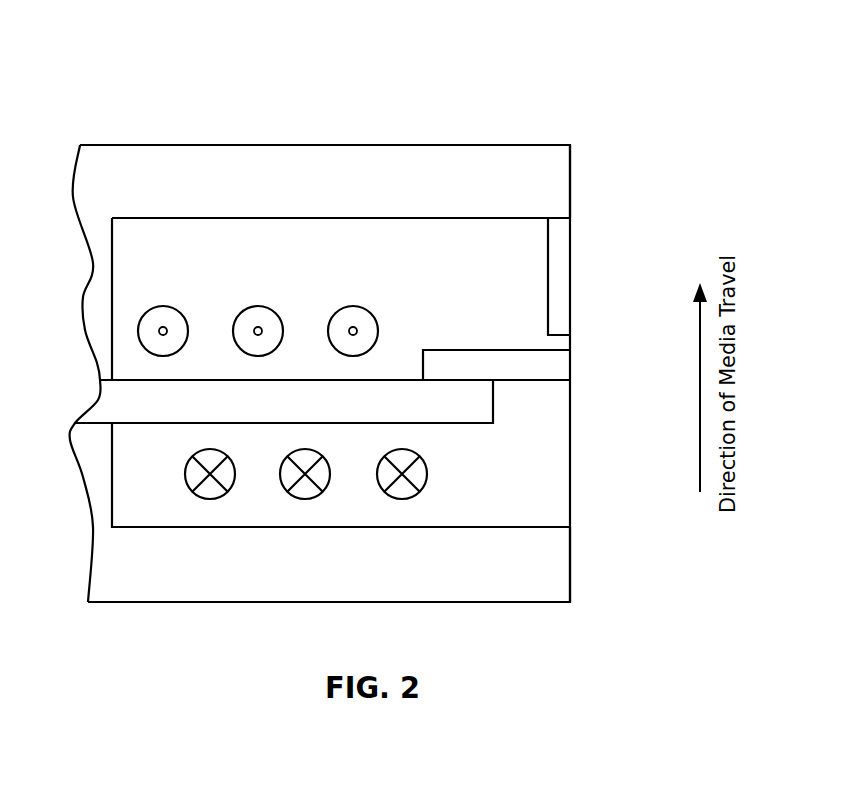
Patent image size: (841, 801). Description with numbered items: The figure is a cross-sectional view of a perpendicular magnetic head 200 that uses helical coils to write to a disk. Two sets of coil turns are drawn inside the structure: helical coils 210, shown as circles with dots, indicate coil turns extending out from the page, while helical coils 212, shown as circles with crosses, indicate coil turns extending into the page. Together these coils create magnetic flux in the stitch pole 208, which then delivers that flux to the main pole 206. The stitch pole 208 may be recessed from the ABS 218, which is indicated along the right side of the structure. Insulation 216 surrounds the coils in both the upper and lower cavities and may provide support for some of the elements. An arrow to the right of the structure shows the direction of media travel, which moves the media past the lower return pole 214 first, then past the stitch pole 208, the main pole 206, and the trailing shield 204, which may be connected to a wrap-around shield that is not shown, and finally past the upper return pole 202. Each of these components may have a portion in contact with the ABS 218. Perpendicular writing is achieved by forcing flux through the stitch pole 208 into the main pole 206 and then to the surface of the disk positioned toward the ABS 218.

The perpendicular magnetic head 200 is at (161, 66).
The upper return pole 202 is at (437, 194).
The trailing shield 204 is at (570, 283).
The main pole 206 is at (570, 360).
The stitch pole 208 is at (364, 412).
The helical coils 210 is at (161, 306).
The helical coils 212 is at (186, 481).
The lower return pole 214 is at (364, 574).
The insulation 216 is at (491, 294).
The ABS 218 is at (571, 172).